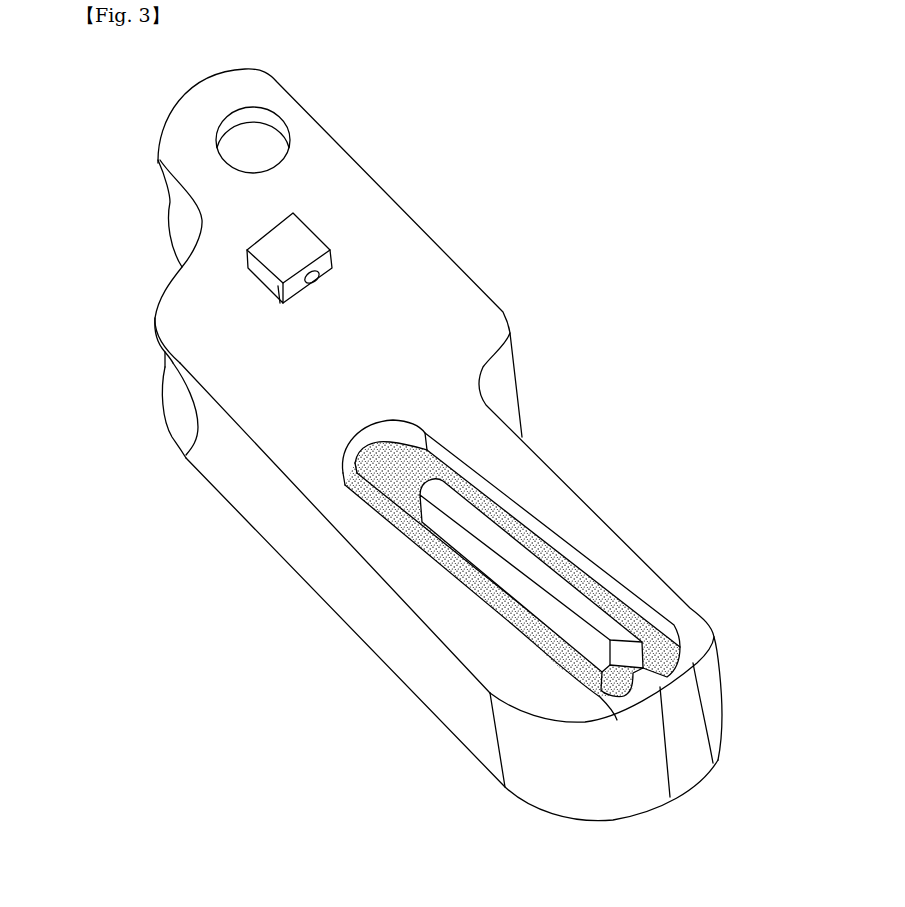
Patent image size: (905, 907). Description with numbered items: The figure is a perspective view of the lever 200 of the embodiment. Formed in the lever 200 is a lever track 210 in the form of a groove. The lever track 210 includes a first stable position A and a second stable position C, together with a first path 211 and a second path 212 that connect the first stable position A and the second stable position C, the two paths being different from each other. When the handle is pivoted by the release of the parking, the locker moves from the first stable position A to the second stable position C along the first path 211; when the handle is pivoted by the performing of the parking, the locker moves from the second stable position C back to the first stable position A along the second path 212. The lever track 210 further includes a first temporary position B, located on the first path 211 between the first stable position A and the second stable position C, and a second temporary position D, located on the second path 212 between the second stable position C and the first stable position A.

The lever 200 is at (436, 210).
The lever track 210 is at (488, 442).
The first path 211 is at (487, 603).
The second path 212 is at (480, 507).
The first stable position A is at (375, 498).
The first temporary position B is at (613, 690).
The second stable position C is at (637, 678).
The second temporary position D is at (640, 680).